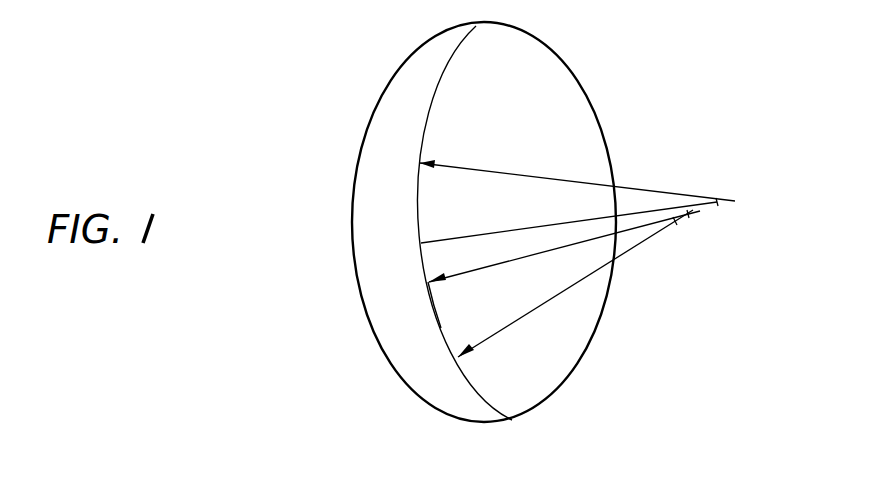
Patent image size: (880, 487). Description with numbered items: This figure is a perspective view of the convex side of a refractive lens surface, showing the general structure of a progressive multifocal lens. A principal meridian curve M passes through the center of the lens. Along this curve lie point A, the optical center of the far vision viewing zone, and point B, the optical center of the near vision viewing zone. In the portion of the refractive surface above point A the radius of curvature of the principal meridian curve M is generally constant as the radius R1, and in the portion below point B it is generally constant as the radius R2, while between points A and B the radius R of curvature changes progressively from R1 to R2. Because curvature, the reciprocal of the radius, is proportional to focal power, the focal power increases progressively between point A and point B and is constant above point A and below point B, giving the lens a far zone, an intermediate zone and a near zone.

The principal meridian curve M is at (450, 60).
The radius of curvature above point A R1 is at (536, 176).
The optical center of the far vision viewing zone A is at (420, 242).
The radius of curvature R is at (525, 258).
The optical center of the near vision viewing zone B is at (440, 327).
The radius of curvature below point B R2 is at (524, 318).